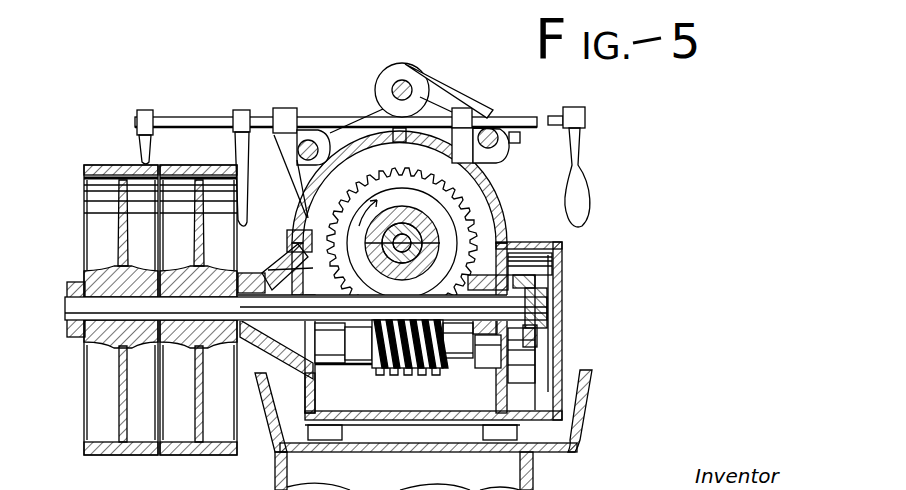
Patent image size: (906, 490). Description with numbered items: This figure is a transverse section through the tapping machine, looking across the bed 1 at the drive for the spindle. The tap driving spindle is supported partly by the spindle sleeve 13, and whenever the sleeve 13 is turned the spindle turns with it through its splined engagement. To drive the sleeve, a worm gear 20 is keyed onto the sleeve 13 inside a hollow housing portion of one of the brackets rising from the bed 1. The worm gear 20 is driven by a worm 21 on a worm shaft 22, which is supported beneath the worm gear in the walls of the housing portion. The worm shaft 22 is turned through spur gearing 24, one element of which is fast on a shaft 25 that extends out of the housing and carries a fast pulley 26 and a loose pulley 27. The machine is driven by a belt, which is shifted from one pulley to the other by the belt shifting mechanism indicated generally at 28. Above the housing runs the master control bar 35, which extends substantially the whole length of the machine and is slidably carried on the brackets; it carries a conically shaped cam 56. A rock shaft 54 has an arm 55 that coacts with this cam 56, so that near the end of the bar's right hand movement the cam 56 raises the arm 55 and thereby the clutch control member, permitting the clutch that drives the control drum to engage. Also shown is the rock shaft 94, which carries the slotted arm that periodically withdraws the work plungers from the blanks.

The bed 1 is at (355, 447).
The spindle sleeve 13 is at (425, 226).
The worm gear 20 is at (398, 173).
The worm 21 is at (410, 368).
The worm shaft 22 is at (356, 352).
The spur gearing 24 is at (538, 372).
The shaft 25 is at (277, 320).
The fast pulley 26 is at (187, 452).
The loose pulley 27 is at (101, 452).
The belt shifting mechanism 28 is at (208, 120).
The master control bar 35 is at (447, 88).
The rock shaft 54 is at (493, 150).
The arm 55 is at (482, 102).
The conically shaped cam 56 is at (404, 63).
The rock shaft 94 is at (289, 181).